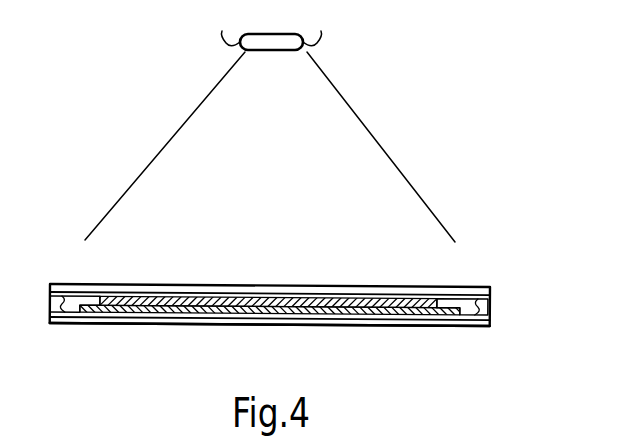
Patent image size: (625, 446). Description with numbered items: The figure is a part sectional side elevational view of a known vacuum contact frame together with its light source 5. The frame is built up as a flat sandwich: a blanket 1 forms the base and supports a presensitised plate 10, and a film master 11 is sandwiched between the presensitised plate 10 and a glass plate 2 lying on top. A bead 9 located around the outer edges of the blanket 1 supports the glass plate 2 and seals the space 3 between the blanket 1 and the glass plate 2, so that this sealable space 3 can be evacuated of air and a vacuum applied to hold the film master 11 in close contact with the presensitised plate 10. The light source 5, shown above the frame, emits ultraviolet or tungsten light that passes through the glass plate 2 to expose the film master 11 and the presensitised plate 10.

The blanket 1 is at (380, 321).
The glass plate 2 is at (462, 293).
The sealable space 3 is at (73, 300).
The light source 5 is at (272, 40).
The bead 9 is at (490, 326).
The presensitised plate 10 is at (142, 310).
The film master 11 is at (180, 303).